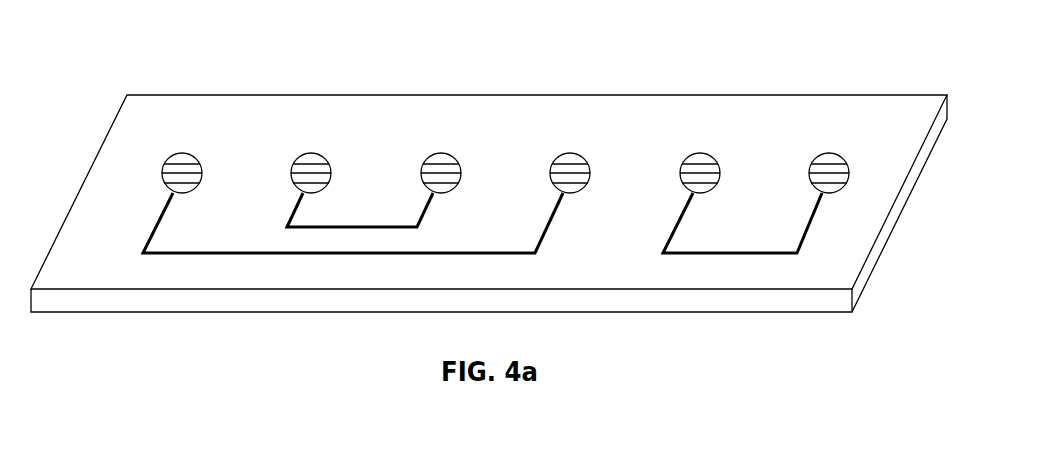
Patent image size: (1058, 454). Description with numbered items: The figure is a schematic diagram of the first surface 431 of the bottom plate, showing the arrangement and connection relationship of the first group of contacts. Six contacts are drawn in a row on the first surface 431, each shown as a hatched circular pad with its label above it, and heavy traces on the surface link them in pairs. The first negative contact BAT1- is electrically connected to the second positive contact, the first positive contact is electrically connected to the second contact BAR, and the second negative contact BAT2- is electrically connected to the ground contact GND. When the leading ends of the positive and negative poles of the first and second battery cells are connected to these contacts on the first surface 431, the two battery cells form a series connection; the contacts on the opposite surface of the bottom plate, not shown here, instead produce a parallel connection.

The first surface 431 is at (760, 113).
The first negative contact BAT1- is at (173, 157).
The second contact BAR is at (434, 157).
The second negative contact BAT2- is at (695, 157).
The ground contact GND is at (824, 157).